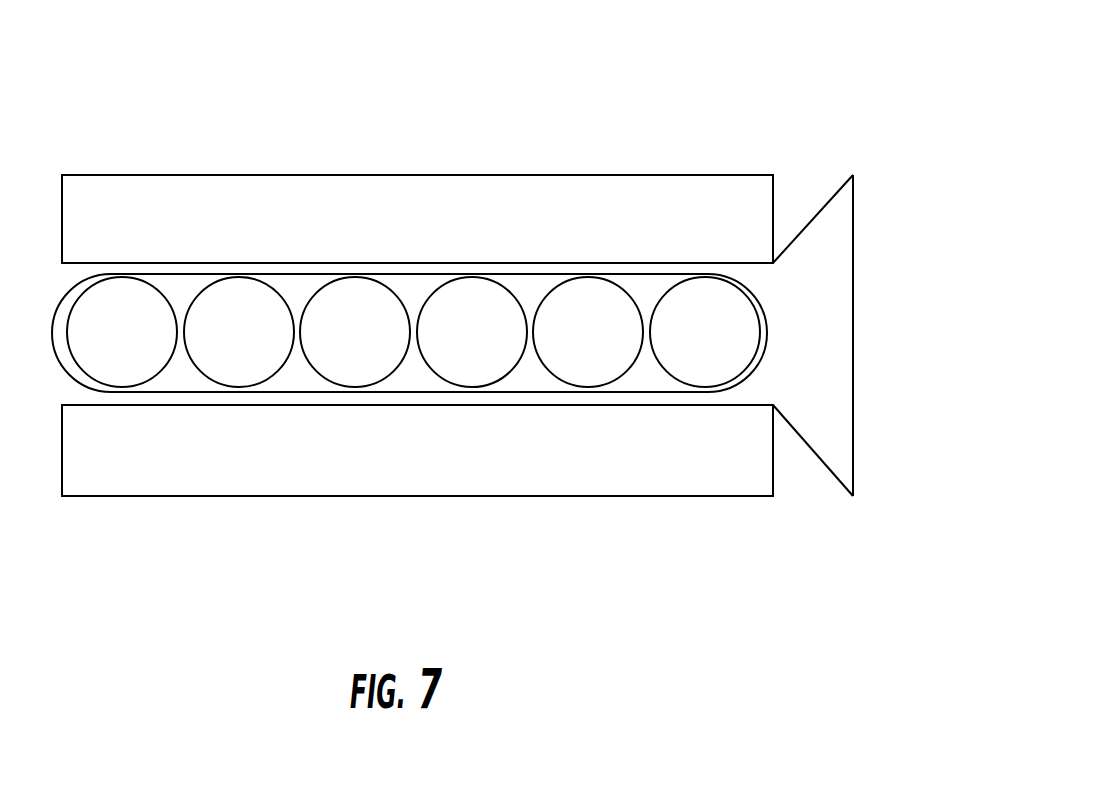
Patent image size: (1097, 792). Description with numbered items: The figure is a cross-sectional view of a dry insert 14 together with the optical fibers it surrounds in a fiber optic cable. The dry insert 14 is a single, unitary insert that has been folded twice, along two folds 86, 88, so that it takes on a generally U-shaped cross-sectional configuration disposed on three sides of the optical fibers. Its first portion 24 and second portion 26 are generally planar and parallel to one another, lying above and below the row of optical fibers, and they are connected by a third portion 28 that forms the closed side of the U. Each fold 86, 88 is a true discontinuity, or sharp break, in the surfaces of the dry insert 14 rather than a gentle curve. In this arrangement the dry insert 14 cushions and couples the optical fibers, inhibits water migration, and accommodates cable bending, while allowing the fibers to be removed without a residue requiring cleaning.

The dry insert 14 is at (680, 82).
The first portion 24 is at (220, 175).
The second portion 26 is at (474, 476).
The third portion 28 is at (855, 328).
The fold 86 is at (806, 222).
The fold 88 is at (818, 451).